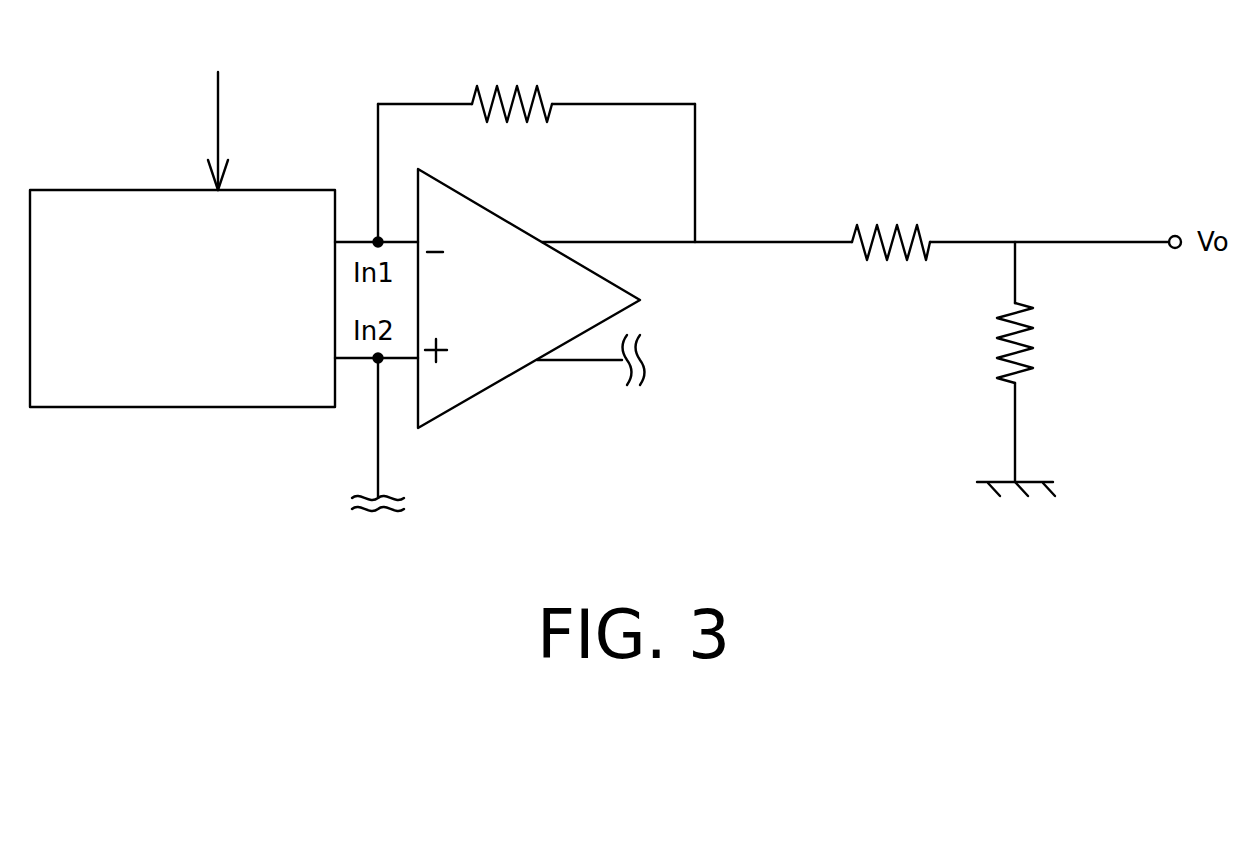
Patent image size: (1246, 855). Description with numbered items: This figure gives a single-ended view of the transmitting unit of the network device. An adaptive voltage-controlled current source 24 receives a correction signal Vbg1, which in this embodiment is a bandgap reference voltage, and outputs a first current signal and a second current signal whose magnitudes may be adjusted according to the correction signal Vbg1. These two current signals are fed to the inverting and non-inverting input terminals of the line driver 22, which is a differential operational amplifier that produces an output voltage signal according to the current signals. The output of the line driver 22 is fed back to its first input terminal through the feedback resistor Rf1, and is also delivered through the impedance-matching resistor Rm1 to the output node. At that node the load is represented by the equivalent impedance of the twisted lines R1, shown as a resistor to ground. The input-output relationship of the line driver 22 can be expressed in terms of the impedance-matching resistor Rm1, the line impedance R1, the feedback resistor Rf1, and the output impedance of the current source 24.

The adaptive voltage-controlled current source 24 is at (182, 298).
The line driver 22 is at (529, 298).
The feedback resistor Rf1 is at (536, 164).
The impedance-matching resistor Rm1 is at (891, 220).
The equivalent impedance of the twisted lines R1 is at (1038, 362).
The correction signal Vbg1 is at (212, 111).